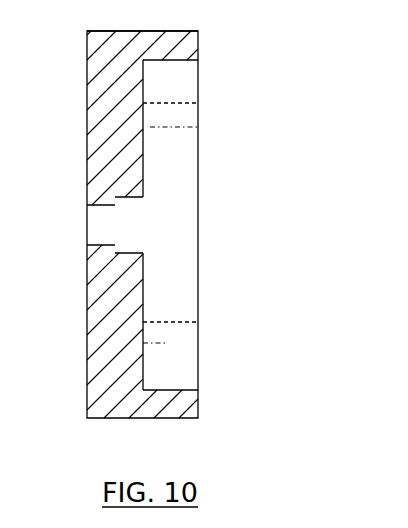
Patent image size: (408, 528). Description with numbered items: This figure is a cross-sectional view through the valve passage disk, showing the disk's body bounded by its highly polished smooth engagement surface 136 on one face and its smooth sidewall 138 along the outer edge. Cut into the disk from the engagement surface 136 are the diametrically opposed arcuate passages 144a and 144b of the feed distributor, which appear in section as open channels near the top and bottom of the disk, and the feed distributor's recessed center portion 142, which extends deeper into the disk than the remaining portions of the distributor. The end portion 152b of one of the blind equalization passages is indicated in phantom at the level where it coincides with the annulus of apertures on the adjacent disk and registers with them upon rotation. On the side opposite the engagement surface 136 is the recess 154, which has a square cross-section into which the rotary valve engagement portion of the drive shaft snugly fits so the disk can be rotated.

The engagement surface 136 is at (198, 47).
The sidewall 138 is at (143, 31).
The recessed center portion 142 is at (125, 197).
The arcuate passage 144a is at (172, 87).
The arcuate passage 144b is at (173, 370).
The end portion 152b is at (185, 117).
The recess 154 is at (103, 245).